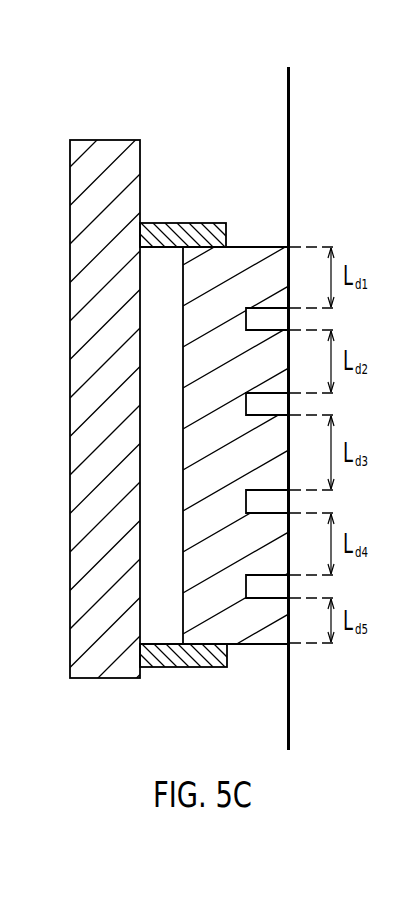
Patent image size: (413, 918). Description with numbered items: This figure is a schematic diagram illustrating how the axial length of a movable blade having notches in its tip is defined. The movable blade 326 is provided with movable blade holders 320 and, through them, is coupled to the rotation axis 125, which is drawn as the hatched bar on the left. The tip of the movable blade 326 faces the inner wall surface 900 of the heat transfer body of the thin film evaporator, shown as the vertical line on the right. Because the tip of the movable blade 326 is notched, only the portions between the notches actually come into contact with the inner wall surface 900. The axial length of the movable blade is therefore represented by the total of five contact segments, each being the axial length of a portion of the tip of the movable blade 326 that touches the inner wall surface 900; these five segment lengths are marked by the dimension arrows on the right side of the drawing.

The rotation axis 125 is at (102, 140).
The movable blade holders 320 is at (187, 223).
The movable blade 326 is at (256, 258).
The inner wall surface 900 is at (290, 117).